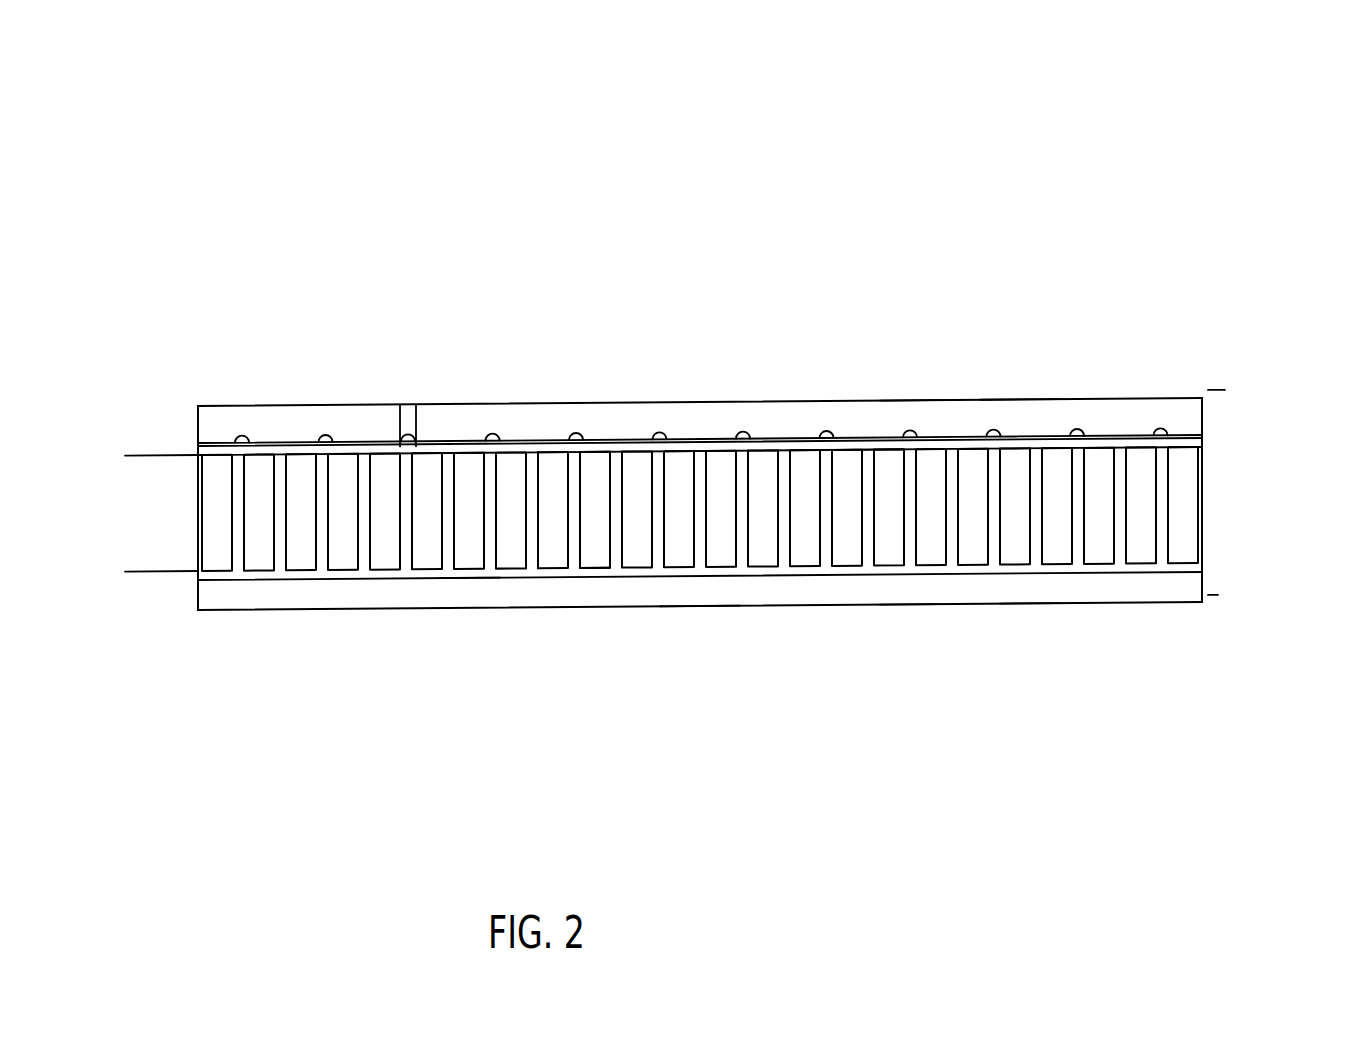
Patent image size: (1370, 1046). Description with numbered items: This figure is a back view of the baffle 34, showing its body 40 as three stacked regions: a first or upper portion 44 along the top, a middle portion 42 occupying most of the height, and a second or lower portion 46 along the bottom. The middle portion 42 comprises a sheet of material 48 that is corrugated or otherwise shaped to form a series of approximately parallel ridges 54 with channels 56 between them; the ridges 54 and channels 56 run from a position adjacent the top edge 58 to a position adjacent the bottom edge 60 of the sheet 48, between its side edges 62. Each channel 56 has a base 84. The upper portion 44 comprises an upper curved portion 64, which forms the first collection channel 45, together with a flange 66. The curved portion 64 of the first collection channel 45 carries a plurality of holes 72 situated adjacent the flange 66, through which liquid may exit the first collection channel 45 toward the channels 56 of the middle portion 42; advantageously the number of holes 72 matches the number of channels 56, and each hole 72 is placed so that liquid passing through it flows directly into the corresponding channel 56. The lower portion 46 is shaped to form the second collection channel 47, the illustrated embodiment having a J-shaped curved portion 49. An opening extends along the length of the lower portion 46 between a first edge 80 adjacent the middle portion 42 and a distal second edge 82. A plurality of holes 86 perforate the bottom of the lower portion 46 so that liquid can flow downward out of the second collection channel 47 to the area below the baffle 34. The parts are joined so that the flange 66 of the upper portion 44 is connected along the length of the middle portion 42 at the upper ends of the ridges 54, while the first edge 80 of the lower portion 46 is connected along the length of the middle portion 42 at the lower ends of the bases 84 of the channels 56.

The baffle 34 is at (309, 112).
The body 40 is at (196, 445).
The middle portion 42 is at (1305, 445).
The first or upper portion 44 is at (1305, 397).
The first collection channel 45 is at (915, 415).
The second or lower portion 46 is at (1305, 572).
The second collection channel 47 is at (907, 592).
The sheet of material 48 is at (867, 455).
The curved portion 49 is at (1027, 608).
The ridges 54 is at (535, 483).
The channels 56 is at (586, 482).
The top edge 58 is at (1205, 447).
The bottom edge 60 is at (1203, 577).
The side edges 62 is at (197, 512).
The upper curved portion 64 is at (1010, 410).
The flange 66 is at (1050, 437).
The holes 72 is at (656, 442).
The first edge 80 is at (196, 585).
The distal second edge 82 is at (465, 578).
The bases 84 is at (580, 485).
The holes 86 is at (700, 609).